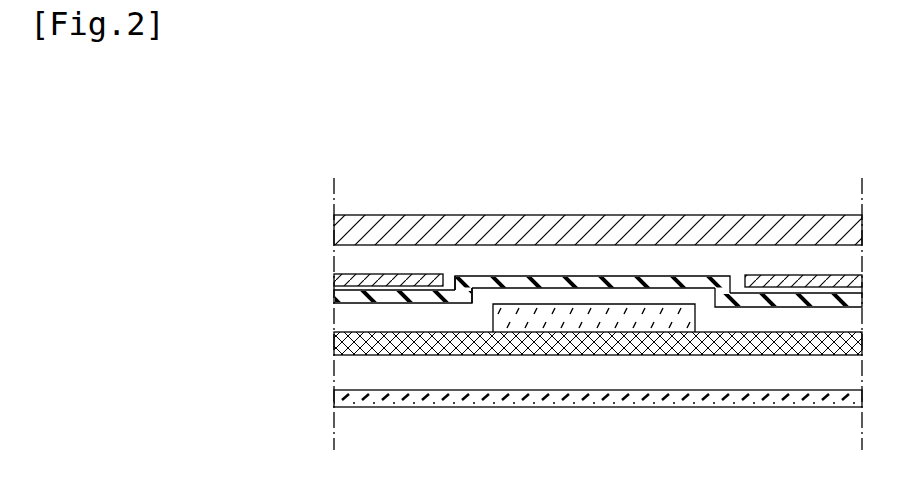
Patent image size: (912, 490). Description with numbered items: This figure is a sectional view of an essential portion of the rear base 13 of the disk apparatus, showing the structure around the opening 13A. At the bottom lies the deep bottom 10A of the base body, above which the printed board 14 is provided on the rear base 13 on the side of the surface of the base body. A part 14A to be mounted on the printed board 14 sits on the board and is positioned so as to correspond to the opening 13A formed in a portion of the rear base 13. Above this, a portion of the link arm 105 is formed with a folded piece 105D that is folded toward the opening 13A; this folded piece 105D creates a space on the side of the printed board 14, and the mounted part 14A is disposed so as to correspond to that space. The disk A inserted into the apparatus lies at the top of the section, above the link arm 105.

The disk A is at (662, 232).
The rear base 13 is at (353, 280).
The folded piece 105D is at (497, 282).
The link arm 105 is at (334, 299).
The opening 13A is at (452, 292).
The part to be mounted on the printed board 14A is at (580, 308).
The printed board 14 is at (334, 345).
The deep bottom 10A is at (334, 400).